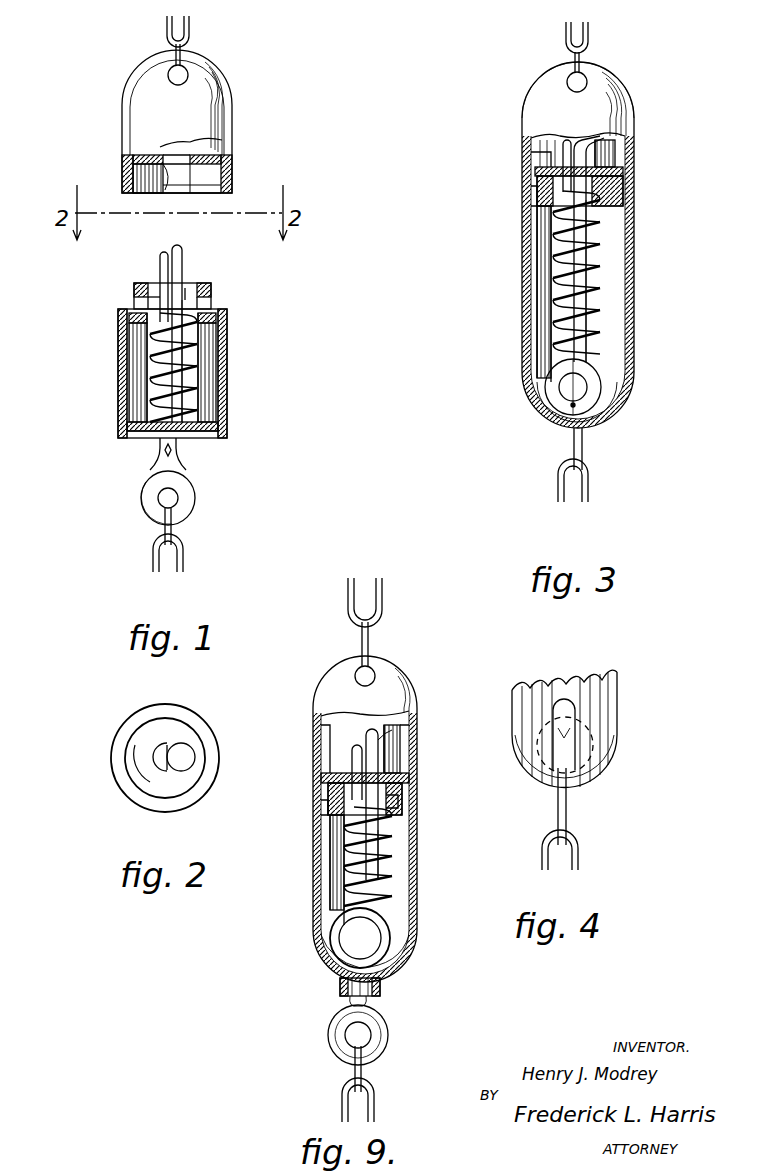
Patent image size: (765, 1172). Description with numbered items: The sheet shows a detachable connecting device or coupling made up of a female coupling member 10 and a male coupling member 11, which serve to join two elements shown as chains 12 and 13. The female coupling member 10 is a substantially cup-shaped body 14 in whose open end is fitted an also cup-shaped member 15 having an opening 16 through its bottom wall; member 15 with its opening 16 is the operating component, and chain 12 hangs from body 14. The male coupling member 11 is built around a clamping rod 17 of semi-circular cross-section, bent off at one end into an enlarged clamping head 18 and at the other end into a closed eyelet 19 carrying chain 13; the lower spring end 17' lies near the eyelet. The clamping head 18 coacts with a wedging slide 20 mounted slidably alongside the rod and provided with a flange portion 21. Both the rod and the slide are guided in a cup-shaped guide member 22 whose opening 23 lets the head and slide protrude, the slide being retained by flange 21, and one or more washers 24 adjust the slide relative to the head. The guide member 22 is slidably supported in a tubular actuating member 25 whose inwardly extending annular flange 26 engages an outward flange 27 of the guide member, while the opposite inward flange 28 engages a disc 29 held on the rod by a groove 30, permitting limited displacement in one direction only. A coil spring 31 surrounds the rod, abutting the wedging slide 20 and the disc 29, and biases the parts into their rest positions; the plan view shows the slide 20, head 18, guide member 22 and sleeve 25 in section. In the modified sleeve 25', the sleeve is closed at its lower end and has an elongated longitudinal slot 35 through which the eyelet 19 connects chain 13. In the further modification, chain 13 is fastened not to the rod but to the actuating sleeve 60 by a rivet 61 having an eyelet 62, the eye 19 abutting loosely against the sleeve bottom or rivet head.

In FIG. 1, the female coupling member 10 is at (251, 97).
In FIG. 3, the female coupling member 10 is at (661, 66).
In FIG. 9, the female coupling member 10 is at (391, 656).
In FIG. 1, the male coupling member 11 is at (262, 378).
In FIG. 3, the male coupling member 11 is at (672, 283).
In FIG. 2, the male coupling member 11 is at (240, 728).
In FIG. 9, the male coupling member 11 is at (430, 934).
In FIG. 1, the chain 12 is at (192, 28).
In FIG. 3, the chain 12 is at (593, 32).
In FIG. 9, the chain 12 is at (385, 600).
In FIG. 1, the chain 13 is at (186, 556).
In FIG. 3, the chain 13 is at (556, 462).
In FIG. 9, the chain 13 is at (376, 1100).
In FIG. 4, the chain 13 is at (552, 826).
In FIG. 1, the cup-shaped body 14 is at (160, 116).
In FIG. 3, the cup-shaped body 14 is at (530, 96).
In FIG. 1, the cup-shaped member 15 is at (232, 166).
In FIG. 3, the cup-shaped member 15 is at (626, 172).
In FIG. 9, the cup-shaped member 15 is at (409, 786).
In FIG. 1, the opening 16 is at (140, 187).
In FIG. 3, the opening 16 is at (608, 160).
In FIG. 9, the opening 16 is at (388, 770).
In FIG. 1, the clamping rod 17 is at (116, 361).
In FIG. 3, the clamping rod 17 is at (529, 272).
In FIG. 9, the clamping rod 17 is at (336, 856).
In FIG. 1, the spring end 17' is at (120, 438).
In FIG. 1, the clamping head 18 is at (196, 246).
In FIG. 3, the clamping head 18 is at (602, 140).
In FIG. 2, the clamping head 18 is at (184, 752).
In FIG. 9, the clamping head 18 is at (380, 742).
In FIG. 1, the eyelet 19 is at (196, 496).
In FIG. 3, the eyelet 19 is at (534, 406).
In FIG. 9, the eyelet 19 is at (344, 955).
In FIG. 4, the eyelet 19 is at (520, 775).
In FIG. 1, the wedging slide 20 is at (160, 262).
In FIG. 3, the wedging slide 20 is at (532, 148).
In FIG. 2, the wedging slide 20 is at (148, 752).
In FIG. 9, the wedging slide 20 is at (356, 748).
In FIG. 1, the flange portion 21 is at (135, 298).
In FIG. 3, the flange portion 21 is at (524, 186).
In FIG. 9, the flange portion 21 is at (324, 820).
In FIG. 1, the guide member 22 is at (212, 298).
In FIG. 2, the guide member 22 is at (132, 770).
In FIG. 9, the guide member 22 is at (322, 800).
In FIG. 1, the opening 23 is at (190, 282).
In FIG. 1, the washer 24 is at (200, 296).
In FIG. 9, the washer 24 is at (392, 800).
In FIG. 1, the actuating member 25 is at (141, 372).
In FIG. 2, the actuating member 25 is at (197, 758).
In FIG. 3, the actuating sleeve 25' is at (538, 394).
In FIG. 4, the actuating sleeve 25' is at (592, 728).
In FIG. 1, the annular flange 26 is at (129, 318).
In FIG. 3, the annular flange 26 is at (624, 200).
In FIG. 9, the annular flange 26 is at (330, 810).
In FIG. 1, the flange 27 is at (220, 334).
In FIG. 3, the flange 27 is at (634, 220).
In FIG. 9, the flange 27 is at (394, 822).
In FIG. 1, the flange 28 is at (130, 440).
In FIG. 1, the disc 29 is at (218, 425).
In FIG. 1, the groove 30 is at (158, 445).
In FIG. 1, the spring 31 is at (200, 382).
In FIG. 3, the spring 31 is at (562, 226).
In FIG. 9, the spring 31 is at (356, 858).
In FIG. 4, the longitudinal slot 35 is at (556, 745).
In FIG. 9, the actuating sleeve 60 is at (314, 940).
In FIG. 9, the rivet 61 is at (338, 992).
In FIG. 9, the eyelet 62 is at (384, 1030).